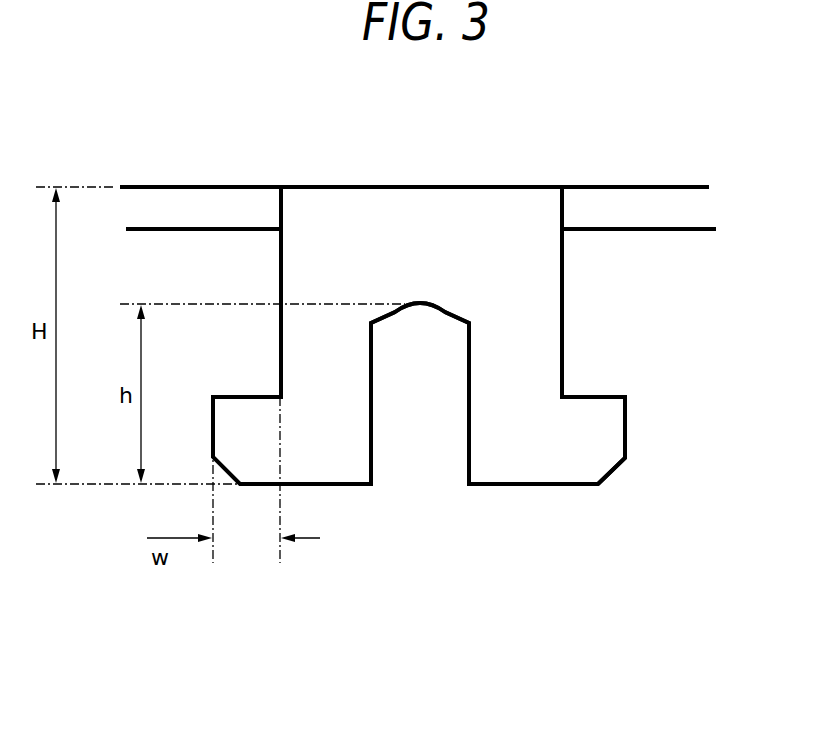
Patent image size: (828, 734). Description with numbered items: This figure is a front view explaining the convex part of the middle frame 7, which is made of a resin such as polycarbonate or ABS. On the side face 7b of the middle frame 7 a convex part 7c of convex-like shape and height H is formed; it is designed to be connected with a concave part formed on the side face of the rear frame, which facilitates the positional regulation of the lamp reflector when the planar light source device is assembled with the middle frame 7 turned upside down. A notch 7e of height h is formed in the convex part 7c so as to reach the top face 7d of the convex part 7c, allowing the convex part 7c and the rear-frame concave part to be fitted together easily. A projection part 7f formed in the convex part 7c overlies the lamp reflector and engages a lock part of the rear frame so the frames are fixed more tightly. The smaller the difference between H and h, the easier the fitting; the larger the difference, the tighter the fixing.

The middle frame 7 is at (179, 169).
The side face 7b is at (643, 208).
The convex part 7c is at (497, 240).
The top face 7d is at (352, 488).
The notch 7e is at (423, 433).
The projection part 7f is at (614, 427).